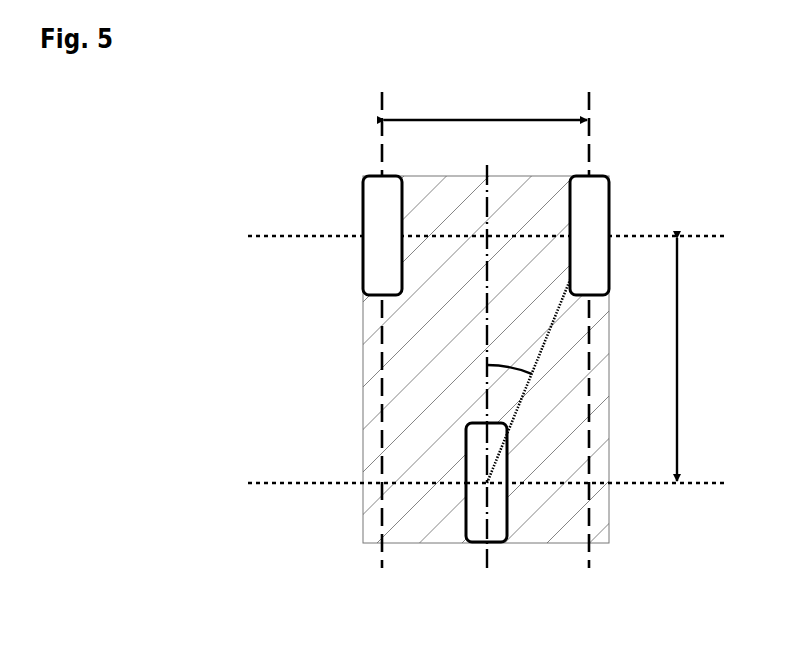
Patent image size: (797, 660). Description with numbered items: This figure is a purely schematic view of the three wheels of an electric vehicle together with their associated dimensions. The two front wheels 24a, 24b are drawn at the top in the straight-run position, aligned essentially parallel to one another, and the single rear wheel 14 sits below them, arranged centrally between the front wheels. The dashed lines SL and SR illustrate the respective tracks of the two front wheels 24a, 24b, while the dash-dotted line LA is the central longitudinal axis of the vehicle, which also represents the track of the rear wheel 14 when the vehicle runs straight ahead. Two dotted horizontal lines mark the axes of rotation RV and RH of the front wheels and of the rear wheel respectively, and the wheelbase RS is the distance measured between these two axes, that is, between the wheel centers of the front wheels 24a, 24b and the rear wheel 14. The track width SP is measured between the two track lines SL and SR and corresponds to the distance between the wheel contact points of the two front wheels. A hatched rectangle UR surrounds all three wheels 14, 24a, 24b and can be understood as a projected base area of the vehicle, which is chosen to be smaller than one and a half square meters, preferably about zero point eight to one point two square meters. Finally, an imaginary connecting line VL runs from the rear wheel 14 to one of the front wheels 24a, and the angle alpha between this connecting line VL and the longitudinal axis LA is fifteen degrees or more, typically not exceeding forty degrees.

The rear wheel 14 is at (478, 528).
The front wheel 24a is at (604, 208).
The front wheel 24b is at (370, 210).
The rectangle UR is at (363, 361).
The connecting line VL is at (537, 362).
The longitudinal axis LA is at (487, 550).
The track line SL is at (380, 315).
The track line SR is at (590, 315).
The track width SP is at (485, 107).
The axis of rotation RV is at (507, 236).
The axis of rotation RH is at (506, 483).
The wheelbase RS is at (696, 359).